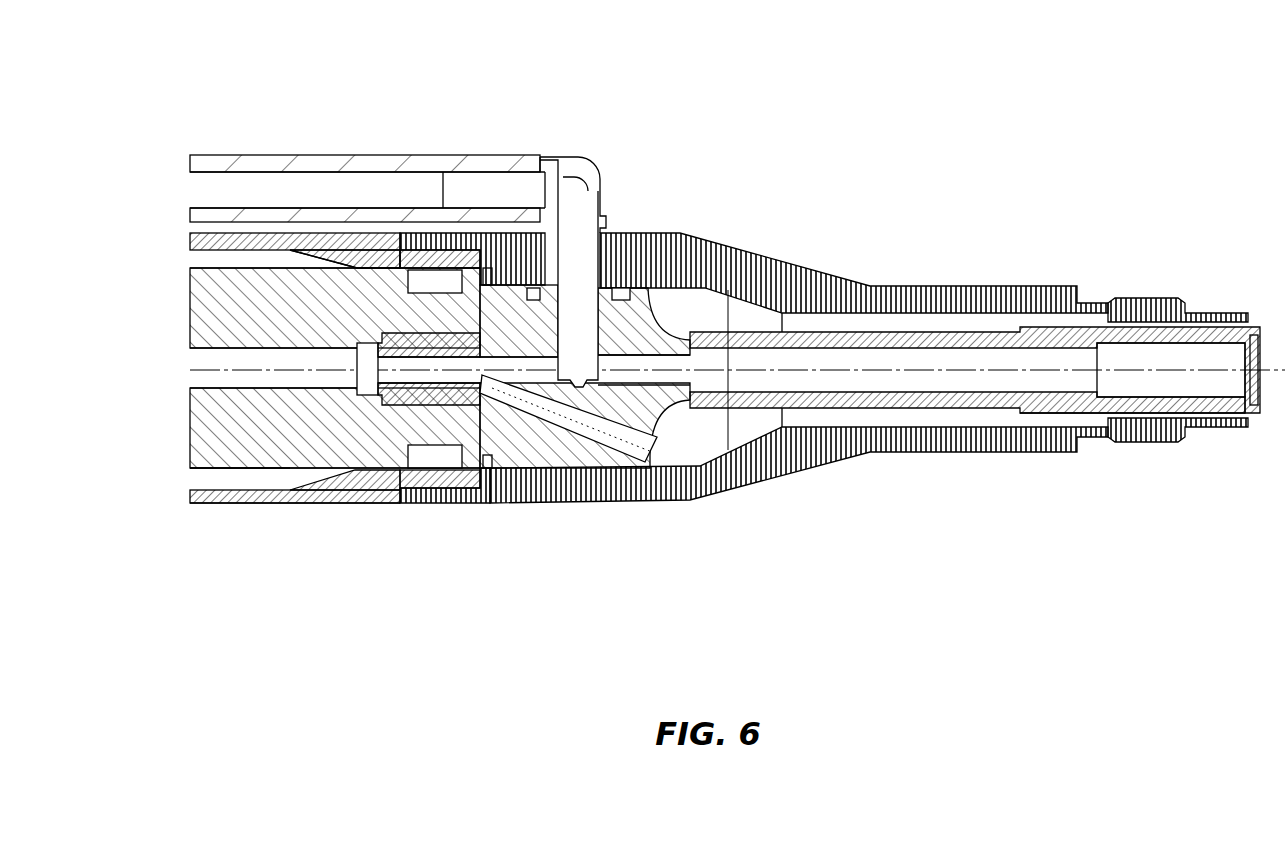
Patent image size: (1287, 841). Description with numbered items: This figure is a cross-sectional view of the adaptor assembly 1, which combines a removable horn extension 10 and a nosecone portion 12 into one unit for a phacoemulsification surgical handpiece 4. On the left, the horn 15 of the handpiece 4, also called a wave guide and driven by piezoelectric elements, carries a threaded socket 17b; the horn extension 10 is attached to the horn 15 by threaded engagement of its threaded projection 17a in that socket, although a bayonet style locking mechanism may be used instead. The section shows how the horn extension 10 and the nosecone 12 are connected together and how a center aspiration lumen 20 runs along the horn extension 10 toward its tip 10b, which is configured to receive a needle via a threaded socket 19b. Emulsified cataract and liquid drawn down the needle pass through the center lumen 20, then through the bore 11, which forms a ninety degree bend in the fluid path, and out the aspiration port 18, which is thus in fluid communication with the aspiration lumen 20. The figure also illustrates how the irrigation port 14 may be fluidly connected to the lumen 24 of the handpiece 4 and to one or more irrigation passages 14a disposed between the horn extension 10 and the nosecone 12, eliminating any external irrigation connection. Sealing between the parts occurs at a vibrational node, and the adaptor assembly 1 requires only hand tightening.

The adaptor assembly 1 is at (1150, 188).
The surgical handpiece 4 is at (288, 248).
The horn extension 10 is at (527, 450).
The tip 10b is at (1215, 402).
The bore 11 is at (582, 318).
The nosecone portion 12 is at (1028, 284).
The irrigation port 14 is at (603, 430).
The irrigation passages 14a is at (1165, 323).
The horn 15 is at (250, 308).
The threaded projection 17a is at (423, 387).
The threaded socket 17b is at (421, 330).
The aspiration port 18 is at (614, 221).
The threaded socket 19b is at (1205, 381).
The center aspiration lumen 20 is at (945, 372).
The lumen 24 is at (307, 375).